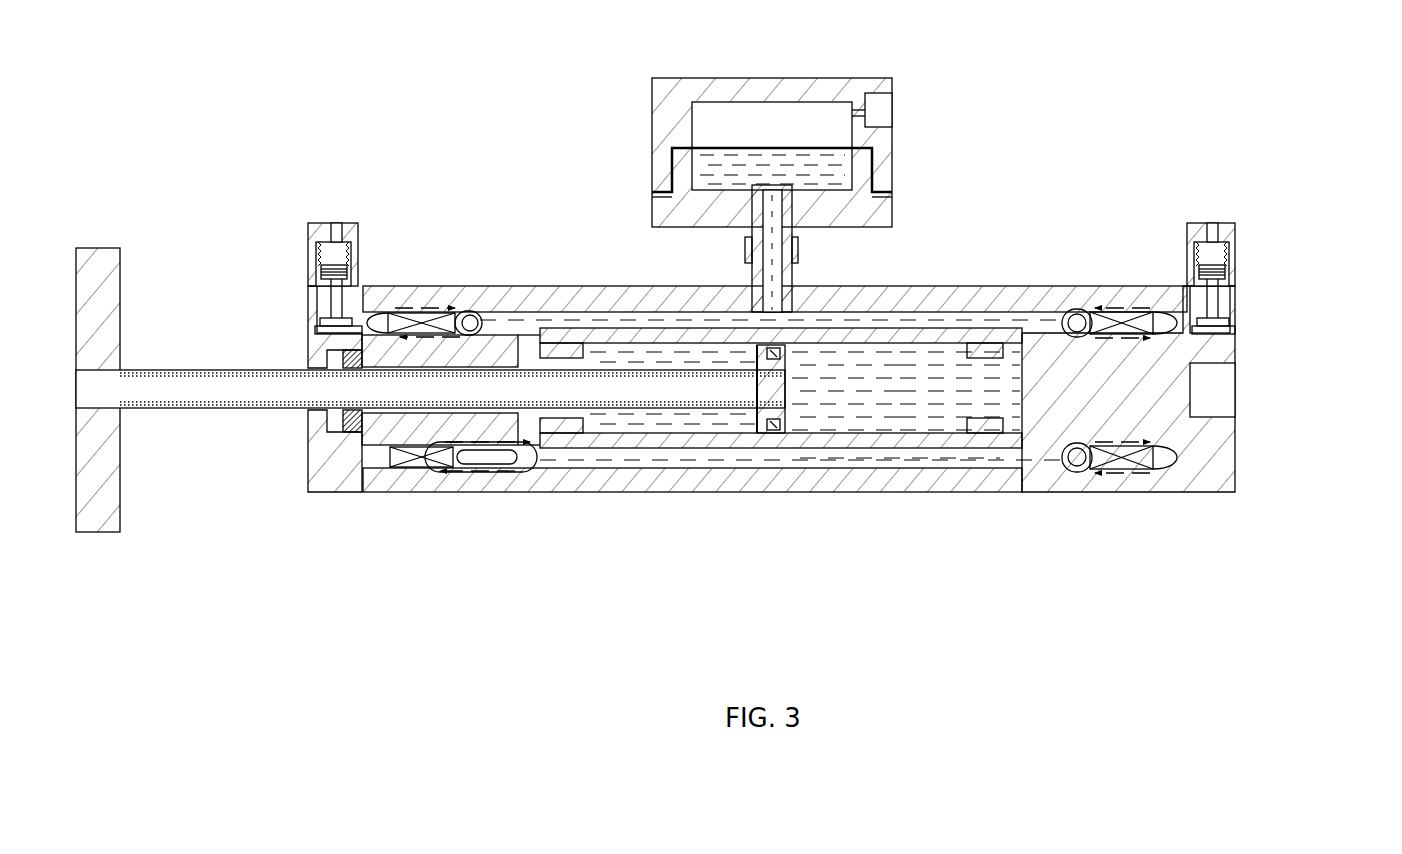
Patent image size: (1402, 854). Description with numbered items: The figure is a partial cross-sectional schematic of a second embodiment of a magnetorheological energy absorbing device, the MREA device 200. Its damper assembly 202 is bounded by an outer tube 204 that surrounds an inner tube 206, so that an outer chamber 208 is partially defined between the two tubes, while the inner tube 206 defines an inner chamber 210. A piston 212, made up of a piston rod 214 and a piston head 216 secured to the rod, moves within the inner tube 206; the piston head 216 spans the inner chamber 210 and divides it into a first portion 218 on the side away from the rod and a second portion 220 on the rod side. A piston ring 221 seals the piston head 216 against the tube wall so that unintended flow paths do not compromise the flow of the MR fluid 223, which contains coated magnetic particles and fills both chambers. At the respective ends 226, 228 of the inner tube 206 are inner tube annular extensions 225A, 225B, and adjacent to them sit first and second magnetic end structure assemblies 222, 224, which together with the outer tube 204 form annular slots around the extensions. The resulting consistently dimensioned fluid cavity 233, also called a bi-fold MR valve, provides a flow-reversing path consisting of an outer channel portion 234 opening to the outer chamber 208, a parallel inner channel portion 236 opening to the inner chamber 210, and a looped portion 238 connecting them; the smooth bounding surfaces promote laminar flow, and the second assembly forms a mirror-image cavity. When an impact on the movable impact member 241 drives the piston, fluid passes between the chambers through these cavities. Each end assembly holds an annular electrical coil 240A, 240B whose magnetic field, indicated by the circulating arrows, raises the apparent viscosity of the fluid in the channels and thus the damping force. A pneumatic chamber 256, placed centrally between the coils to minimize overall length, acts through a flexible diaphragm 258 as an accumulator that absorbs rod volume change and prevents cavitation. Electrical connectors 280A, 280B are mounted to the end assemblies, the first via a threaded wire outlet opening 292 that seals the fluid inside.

The MREA device 200 is at (1012, 140).
The damper assembly 202 is at (941, 248).
The outer tube 204 is at (633, 297).
The inner tube 206 is at (680, 443).
The outer chamber 208 is at (812, 460).
The inner chamber 210 is at (643, 422).
The piston 212 is at (592, 455).
The piston rod 214 is at (288, 396).
The piston head 216 is at (757, 420).
The first portion 218 is at (940, 398).
The second portion 220 is at (700, 425).
The piston ring 221 is at (771, 412).
The first magnetic end structure assembly 222 is at (356, 432).
The MR fluid 223 is at (873, 365).
The second magnetic end structure assembly 224 is at (1190, 440).
The inner tube annular extension 225A is at (470, 470).
The inner tube annular extension 225B is at (1050, 458).
The end of inner tube 226 is at (585, 330).
The end of inner tube 228 is at (1080, 320).
The fluid cavity 233 is at (522, 320).
The outer channel portion 234 is at (474, 470).
The inner channel portion 236 is at (507, 470).
The looped portion 238 is at (450, 470).
The annular electrical coil 240A is at (420, 314).
The annular electrical coil 240B is at (1128, 318).
The movable impact member 241 is at (76, 273).
The pneumatic chamber 256 is at (812, 120).
The flexible diaphragm 258 is at (825, 148).
The electrical connector 280A is at (320, 223).
The electrical connector 280B is at (1236, 236).
The threaded wire outlet opening 292 is at (322, 300).